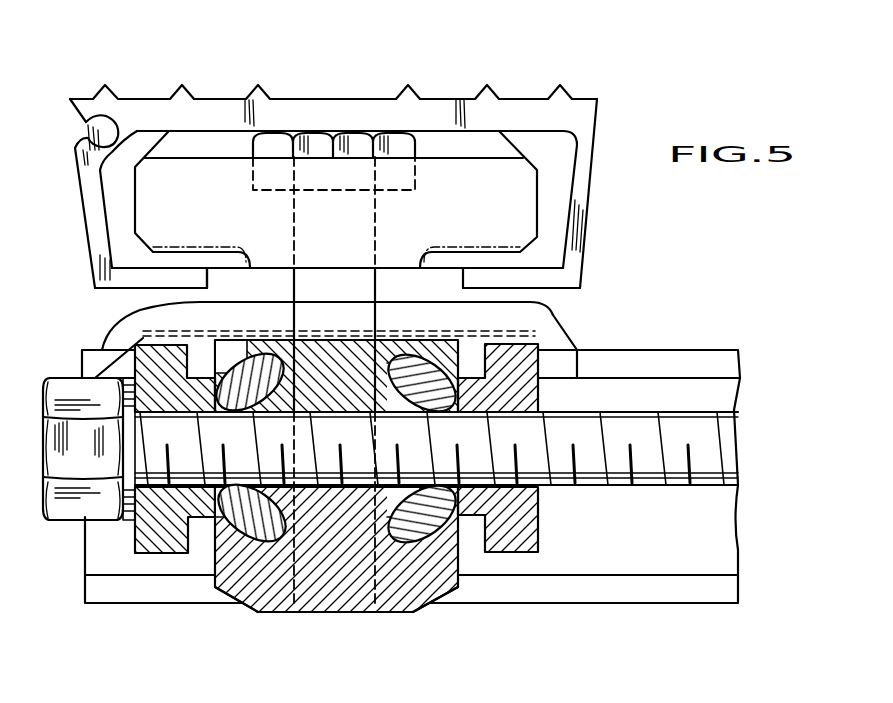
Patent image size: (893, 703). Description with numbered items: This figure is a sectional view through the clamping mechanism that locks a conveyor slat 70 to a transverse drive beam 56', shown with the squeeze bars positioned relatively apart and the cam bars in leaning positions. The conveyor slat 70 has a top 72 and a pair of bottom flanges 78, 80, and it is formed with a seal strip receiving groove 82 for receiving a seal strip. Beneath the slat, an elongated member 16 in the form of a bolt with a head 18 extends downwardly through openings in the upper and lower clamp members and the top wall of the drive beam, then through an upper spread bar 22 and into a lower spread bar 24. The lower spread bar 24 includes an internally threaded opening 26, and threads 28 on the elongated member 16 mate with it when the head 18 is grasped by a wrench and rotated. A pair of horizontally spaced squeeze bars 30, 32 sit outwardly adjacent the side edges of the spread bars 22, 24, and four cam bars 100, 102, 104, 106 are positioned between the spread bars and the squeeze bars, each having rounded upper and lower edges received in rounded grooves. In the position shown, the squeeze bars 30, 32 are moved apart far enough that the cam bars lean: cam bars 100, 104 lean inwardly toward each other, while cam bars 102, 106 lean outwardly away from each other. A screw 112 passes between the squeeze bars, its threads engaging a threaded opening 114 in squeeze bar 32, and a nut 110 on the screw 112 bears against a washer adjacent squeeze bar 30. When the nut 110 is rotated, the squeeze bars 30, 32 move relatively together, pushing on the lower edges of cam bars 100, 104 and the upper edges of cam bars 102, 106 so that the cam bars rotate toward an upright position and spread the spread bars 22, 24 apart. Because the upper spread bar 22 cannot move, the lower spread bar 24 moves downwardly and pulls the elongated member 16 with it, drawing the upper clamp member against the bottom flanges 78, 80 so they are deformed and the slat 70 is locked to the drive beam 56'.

The conveyor slat 70 is at (604, 78).
The top 72 is at (330, 98).
The head 18 is at (357, 137).
The seal strip receiving groove 82 is at (80, 141).
The elongated member 16 is at (303, 217).
The bottom flange 80 is at (145, 280).
The bottom flange 78 is at (545, 283).
The upper spread bar 22 is at (146, 320).
The threaded opening 114 is at (543, 430).
The screw 112 is at (672, 472).
The nut 110 is at (72, 468).
The squeeze bar 30 is at (158, 542).
The lower spread bar 24 is at (280, 606).
The internally threaded opening 26 is at (300, 556).
The threads 28 is at (405, 598).
The squeeze bar 32 is at (523, 523).
The cam bar 100 is at (268, 358).
The cam bar 104 is at (417, 357).
The cam bar 102 is at (226, 532).
The cam bar 106 is at (440, 522).
The transverse drive beam 56' is at (411, 594).